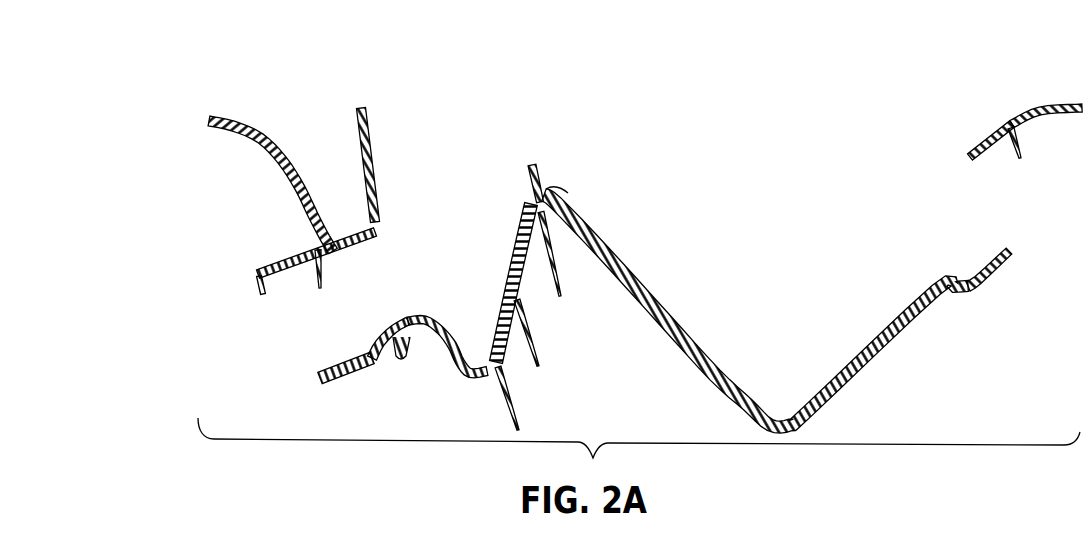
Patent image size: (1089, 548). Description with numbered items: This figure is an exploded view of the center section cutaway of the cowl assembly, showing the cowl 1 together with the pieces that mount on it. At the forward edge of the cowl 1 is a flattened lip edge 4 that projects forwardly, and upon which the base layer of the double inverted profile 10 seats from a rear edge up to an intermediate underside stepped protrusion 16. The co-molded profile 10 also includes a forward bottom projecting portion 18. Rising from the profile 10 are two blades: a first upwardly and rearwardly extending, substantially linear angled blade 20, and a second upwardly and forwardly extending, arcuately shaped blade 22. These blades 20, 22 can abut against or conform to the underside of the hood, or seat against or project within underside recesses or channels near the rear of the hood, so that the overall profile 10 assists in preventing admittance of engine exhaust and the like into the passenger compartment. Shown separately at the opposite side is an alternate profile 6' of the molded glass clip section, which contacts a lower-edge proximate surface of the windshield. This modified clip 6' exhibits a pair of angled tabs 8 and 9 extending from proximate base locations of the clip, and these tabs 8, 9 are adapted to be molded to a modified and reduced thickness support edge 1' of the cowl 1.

The cowl 1 is at (729, 298).
The modified and reduced thickness support edge of the cowl 1' is at (987, 250).
The flattened lip edge 4 is at (347, 376).
The alternate profile of the molded glass clip 6' is at (1046, 94).
The angled tab 8 is at (978, 148).
The angled tab 9 is at (1022, 150).
The double inverted profile 10 is at (331, 204).
The intermediate underside stepped protrusion 16 is at (322, 267).
The forward bottom projecting portion 18 is at (262, 292).
The first angled blade 20 is at (377, 173).
The second arcuately shaped blade 22 is at (258, 131).